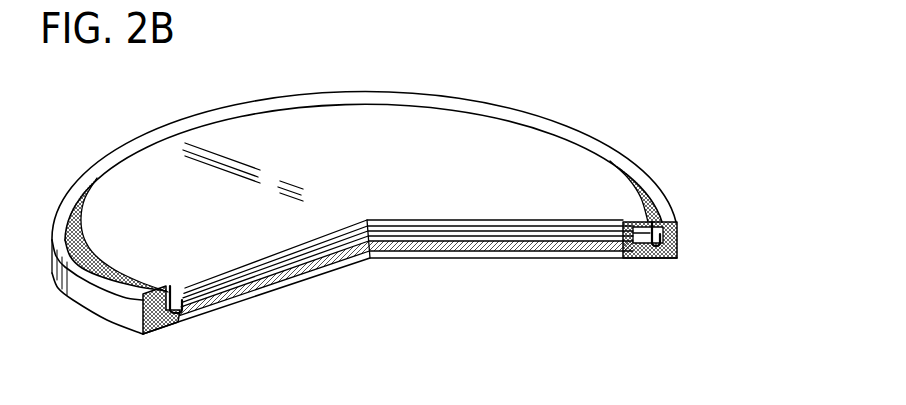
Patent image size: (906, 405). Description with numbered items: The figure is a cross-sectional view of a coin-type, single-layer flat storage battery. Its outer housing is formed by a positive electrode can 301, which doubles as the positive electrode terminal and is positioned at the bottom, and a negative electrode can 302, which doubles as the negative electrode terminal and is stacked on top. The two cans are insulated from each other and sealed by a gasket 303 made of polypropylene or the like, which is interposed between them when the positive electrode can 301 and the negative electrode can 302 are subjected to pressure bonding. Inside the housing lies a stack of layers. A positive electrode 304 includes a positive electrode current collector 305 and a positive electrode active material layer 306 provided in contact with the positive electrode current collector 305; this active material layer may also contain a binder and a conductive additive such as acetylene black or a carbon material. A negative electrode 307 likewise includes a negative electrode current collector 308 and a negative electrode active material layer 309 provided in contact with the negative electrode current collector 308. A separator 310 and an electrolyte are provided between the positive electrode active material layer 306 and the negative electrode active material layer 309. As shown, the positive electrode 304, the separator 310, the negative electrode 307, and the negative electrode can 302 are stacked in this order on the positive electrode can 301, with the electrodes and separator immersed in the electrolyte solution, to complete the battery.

The positive electrode can 301 is at (677, 250).
The negative electrode can 302 is at (537, 140).
The gasket 303 is at (677, 233).
The positive electrode 304 is at (410, 328).
The positive electrode current collector 305 is at (607, 258).
The positive electrode active material layer 306 is at (565, 258).
The negative electrode 307 is at (408, 304).
The negative electrode current collector 308 is at (385, 258).
The negative electrode active material layer 309 is at (418, 258).
The separator 310 is at (487, 258).